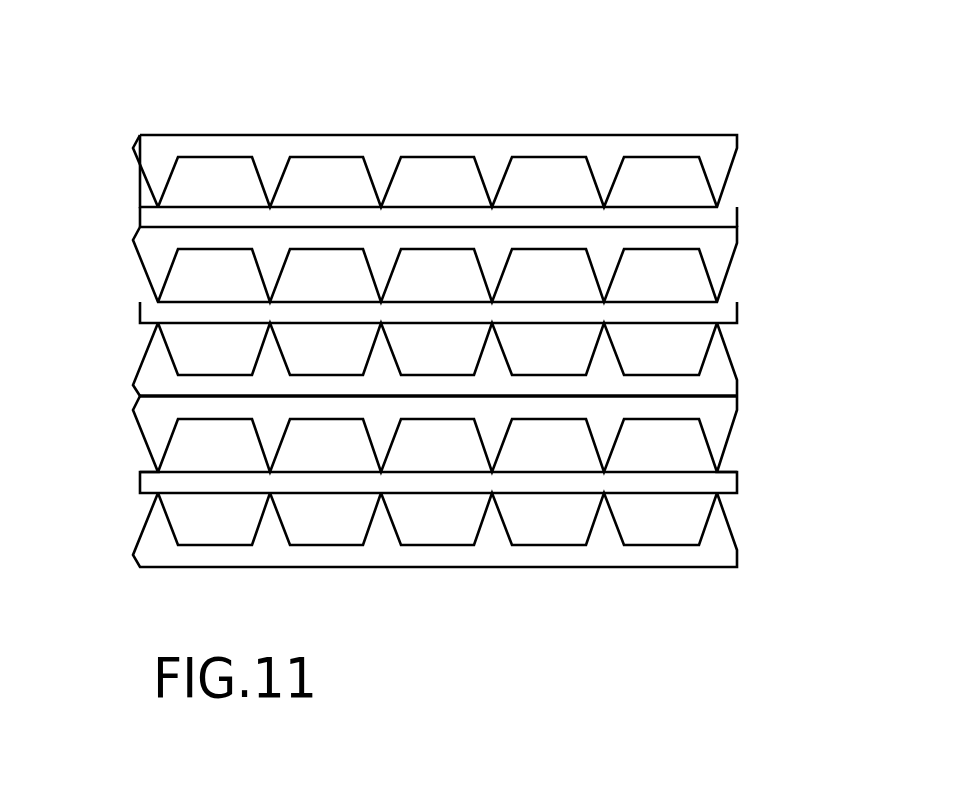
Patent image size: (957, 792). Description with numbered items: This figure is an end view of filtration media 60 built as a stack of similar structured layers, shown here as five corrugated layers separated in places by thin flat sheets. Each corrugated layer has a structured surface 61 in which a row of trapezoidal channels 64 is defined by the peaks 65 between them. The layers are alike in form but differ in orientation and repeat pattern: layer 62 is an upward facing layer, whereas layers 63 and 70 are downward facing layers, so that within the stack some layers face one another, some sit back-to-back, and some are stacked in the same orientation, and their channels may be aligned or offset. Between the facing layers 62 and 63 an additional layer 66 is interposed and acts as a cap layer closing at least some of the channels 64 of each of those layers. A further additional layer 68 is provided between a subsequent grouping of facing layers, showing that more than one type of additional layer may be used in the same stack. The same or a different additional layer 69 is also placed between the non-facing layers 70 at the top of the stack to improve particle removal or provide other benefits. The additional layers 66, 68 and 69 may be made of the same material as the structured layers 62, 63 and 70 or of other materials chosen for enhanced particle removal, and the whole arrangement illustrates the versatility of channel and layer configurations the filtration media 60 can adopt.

The filtration media 60 is at (148, 121).
The downward facing layer 70 is at (737, 148).
The additional layer 69 is at (148, 215).
The additional layer 68 is at (147, 315).
The upward facing layer 62 is at (737, 377).
The downward facing layer 63 is at (737, 410).
The additional layer 66 is at (147, 483).
The structured surface 61 is at (730, 520).
The channel 64 is at (207, 518).
The peak 65 is at (270, 530).